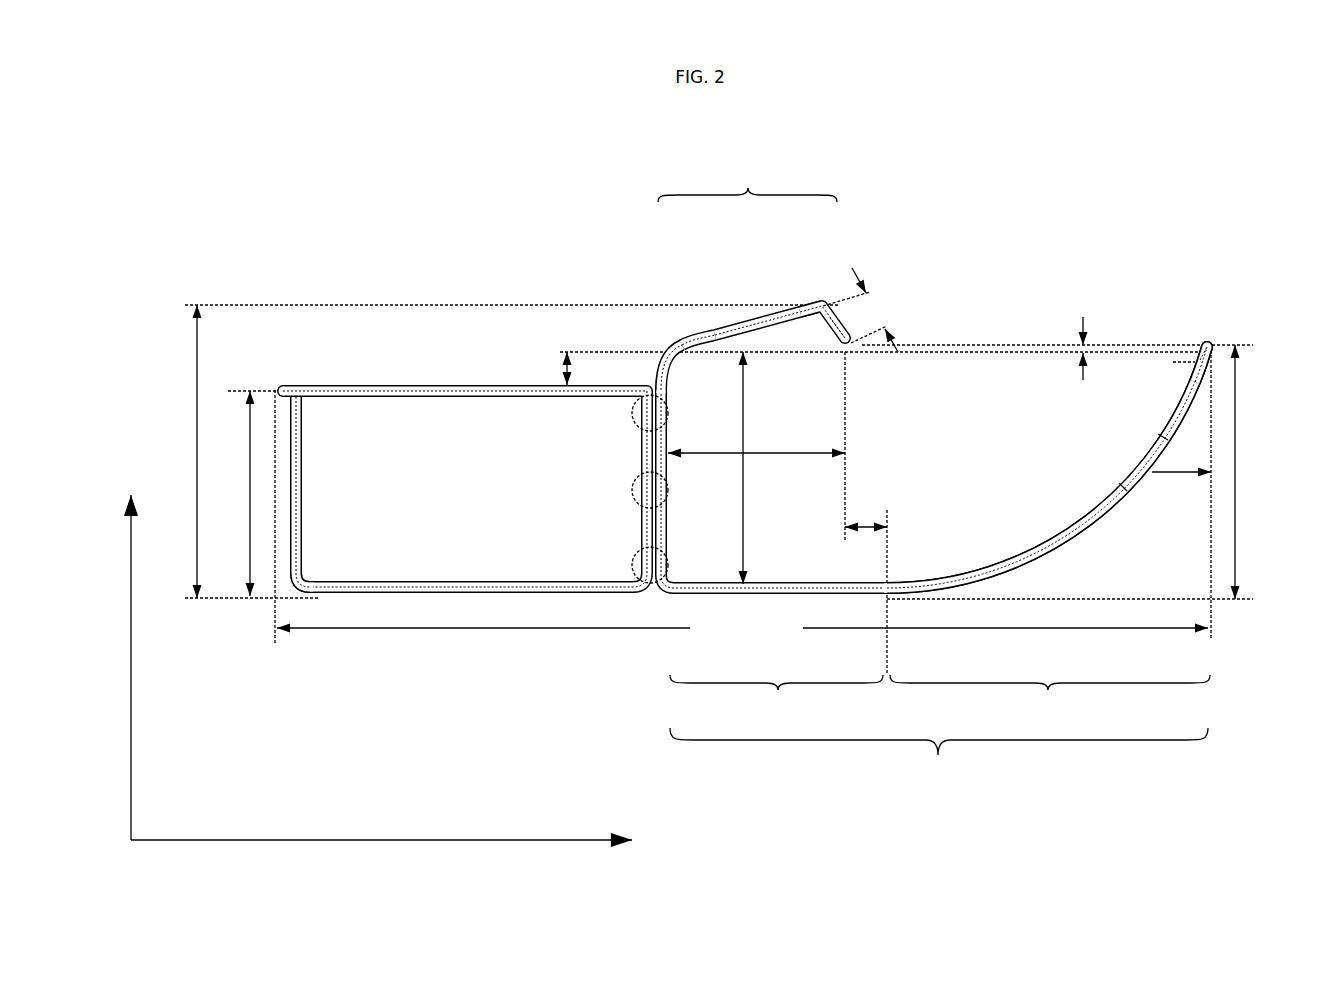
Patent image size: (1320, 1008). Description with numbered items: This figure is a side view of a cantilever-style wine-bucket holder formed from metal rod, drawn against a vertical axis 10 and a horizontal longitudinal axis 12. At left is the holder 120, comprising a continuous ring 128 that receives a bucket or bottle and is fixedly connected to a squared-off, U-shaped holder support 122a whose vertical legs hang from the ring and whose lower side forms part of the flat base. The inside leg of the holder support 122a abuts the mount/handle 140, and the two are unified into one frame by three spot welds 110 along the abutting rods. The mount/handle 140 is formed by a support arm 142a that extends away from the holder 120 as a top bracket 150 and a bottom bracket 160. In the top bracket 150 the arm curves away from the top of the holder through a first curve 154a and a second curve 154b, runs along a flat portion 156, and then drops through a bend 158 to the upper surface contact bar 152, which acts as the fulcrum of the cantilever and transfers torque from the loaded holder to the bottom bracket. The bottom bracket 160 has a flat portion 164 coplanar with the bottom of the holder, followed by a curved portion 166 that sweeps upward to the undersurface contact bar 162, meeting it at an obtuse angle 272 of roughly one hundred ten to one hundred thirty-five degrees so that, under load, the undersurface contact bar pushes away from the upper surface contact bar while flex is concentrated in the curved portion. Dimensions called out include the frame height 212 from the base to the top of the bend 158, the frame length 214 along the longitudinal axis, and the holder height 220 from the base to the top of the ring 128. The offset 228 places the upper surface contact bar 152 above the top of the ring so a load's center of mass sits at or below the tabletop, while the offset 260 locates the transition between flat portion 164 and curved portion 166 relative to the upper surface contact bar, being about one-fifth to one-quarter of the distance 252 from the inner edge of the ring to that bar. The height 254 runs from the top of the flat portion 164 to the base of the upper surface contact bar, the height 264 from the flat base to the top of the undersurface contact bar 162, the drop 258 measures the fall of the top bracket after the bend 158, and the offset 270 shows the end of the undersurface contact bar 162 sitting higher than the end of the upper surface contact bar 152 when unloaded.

The vertical axis 10 is at (131, 733).
The Horizontal (Longitudinal) Axis 12 is at (420, 840).
The welds 110 is at (637, 556).
The holder 120 is at (454, 344).
The first support 122a is at (341, 492).
The continuous ring 128 is at (473, 408).
The mount/handle 140 is at (1079, 343).
The support arm 142a is at (1123, 510).
The top bracket 150 is at (731, 280).
The upper surface contact bar 152 is at (849, 356).
The first curve 154a is at (653, 384).
The second curve 154b is at (700, 338).
The flat portion 156 is at (752, 322).
The bend 158 is at (823, 317).
The bottom bracket 160 is at (937, 570).
The undersurface contact bar 162 is at (1218, 311).
The flat portion 164 is at (774, 562).
The curved portion 166 is at (1048, 537).
The frame height 212 is at (188, 451).
The frame length 214 is at (742, 631).
The holder height 220 is at (250, 493).
The offset 228 is at (562, 376).
The distance 252 is at (756, 453).
The vertical height 254 is at (743, 468).
The drop 258 is at (863, 310).
The offset 260 is at (867, 533).
The vertical height 264 is at (1200, 472).
The offset 270 is at (1082, 369).
The obtuse angle 272 is at (1195, 348).